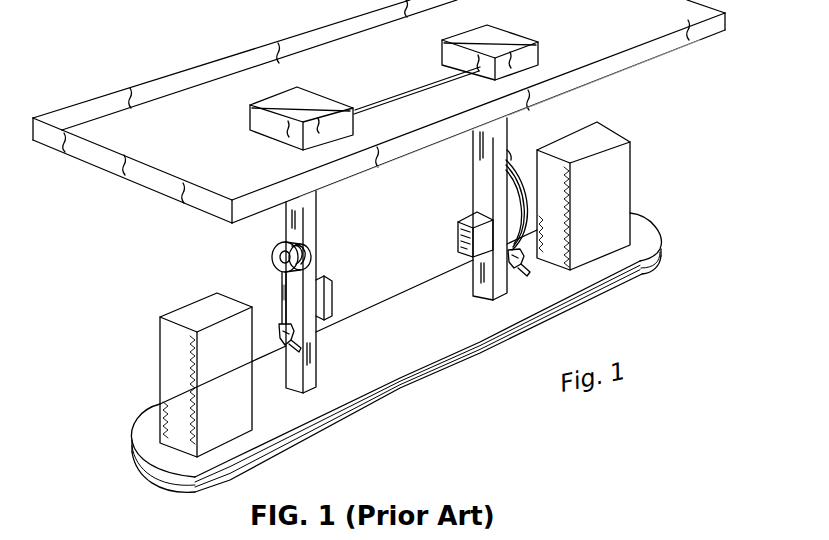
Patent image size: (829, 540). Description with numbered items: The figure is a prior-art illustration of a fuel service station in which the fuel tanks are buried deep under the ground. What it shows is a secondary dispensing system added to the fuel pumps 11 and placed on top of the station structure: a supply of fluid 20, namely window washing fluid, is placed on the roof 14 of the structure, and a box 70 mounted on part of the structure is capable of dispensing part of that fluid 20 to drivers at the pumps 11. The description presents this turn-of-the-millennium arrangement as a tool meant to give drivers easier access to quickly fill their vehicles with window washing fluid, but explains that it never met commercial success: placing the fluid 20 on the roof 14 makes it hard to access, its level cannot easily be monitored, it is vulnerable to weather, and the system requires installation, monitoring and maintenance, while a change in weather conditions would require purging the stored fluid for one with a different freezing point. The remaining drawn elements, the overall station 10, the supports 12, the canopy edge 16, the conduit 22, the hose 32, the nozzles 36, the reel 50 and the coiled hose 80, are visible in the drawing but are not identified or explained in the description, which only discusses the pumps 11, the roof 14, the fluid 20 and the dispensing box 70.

The prior art fueling station 10 is at (163, 228).
The fuel pumps 11 is at (160, 353).
The support pillar 12 is at (316, 213).
The roof 14 is at (598, 43).
The canopy edge 16 is at (628, 59).
The fluid 20 is at (250, 114).
The conduit between housings 22 is at (409, 94).
The fuel hose 32 is at (282, 298).
The fuel nozzle 36 is at (281, 330).
The hose reel 50 is at (274, 264).
The box 70 is at (324, 295).
The coiled hose 80 is at (512, 158).